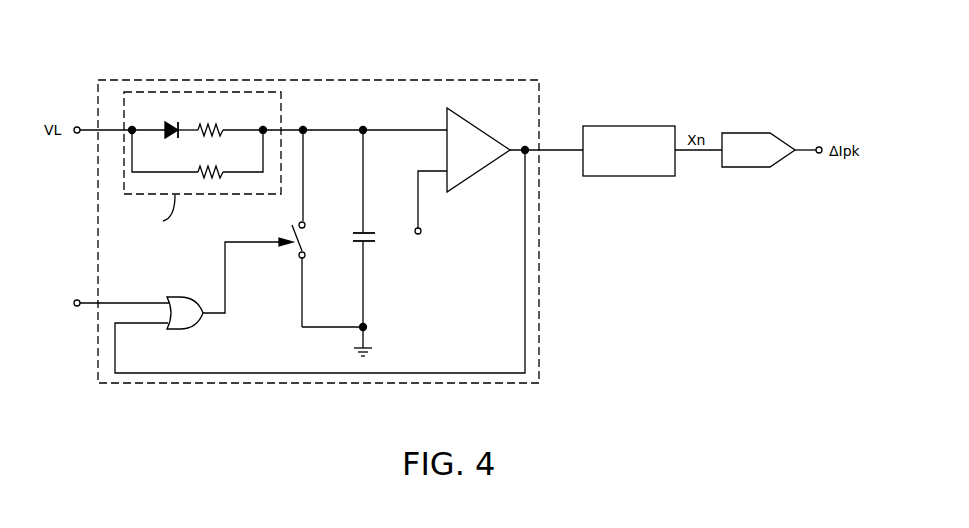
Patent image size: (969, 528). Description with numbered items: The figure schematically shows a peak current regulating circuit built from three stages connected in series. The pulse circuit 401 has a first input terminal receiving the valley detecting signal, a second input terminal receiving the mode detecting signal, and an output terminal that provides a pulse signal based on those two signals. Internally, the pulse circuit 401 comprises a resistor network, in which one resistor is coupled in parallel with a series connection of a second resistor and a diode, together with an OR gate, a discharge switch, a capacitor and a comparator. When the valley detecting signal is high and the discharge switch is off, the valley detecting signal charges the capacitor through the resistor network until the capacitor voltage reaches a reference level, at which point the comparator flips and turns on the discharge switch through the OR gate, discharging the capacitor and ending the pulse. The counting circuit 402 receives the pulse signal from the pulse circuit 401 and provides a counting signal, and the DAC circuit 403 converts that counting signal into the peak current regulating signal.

The pulse circuit 401 is at (320, 80).
The counting circuit 402 is at (627, 126).
The DAC circuit 403 is at (748, 133).